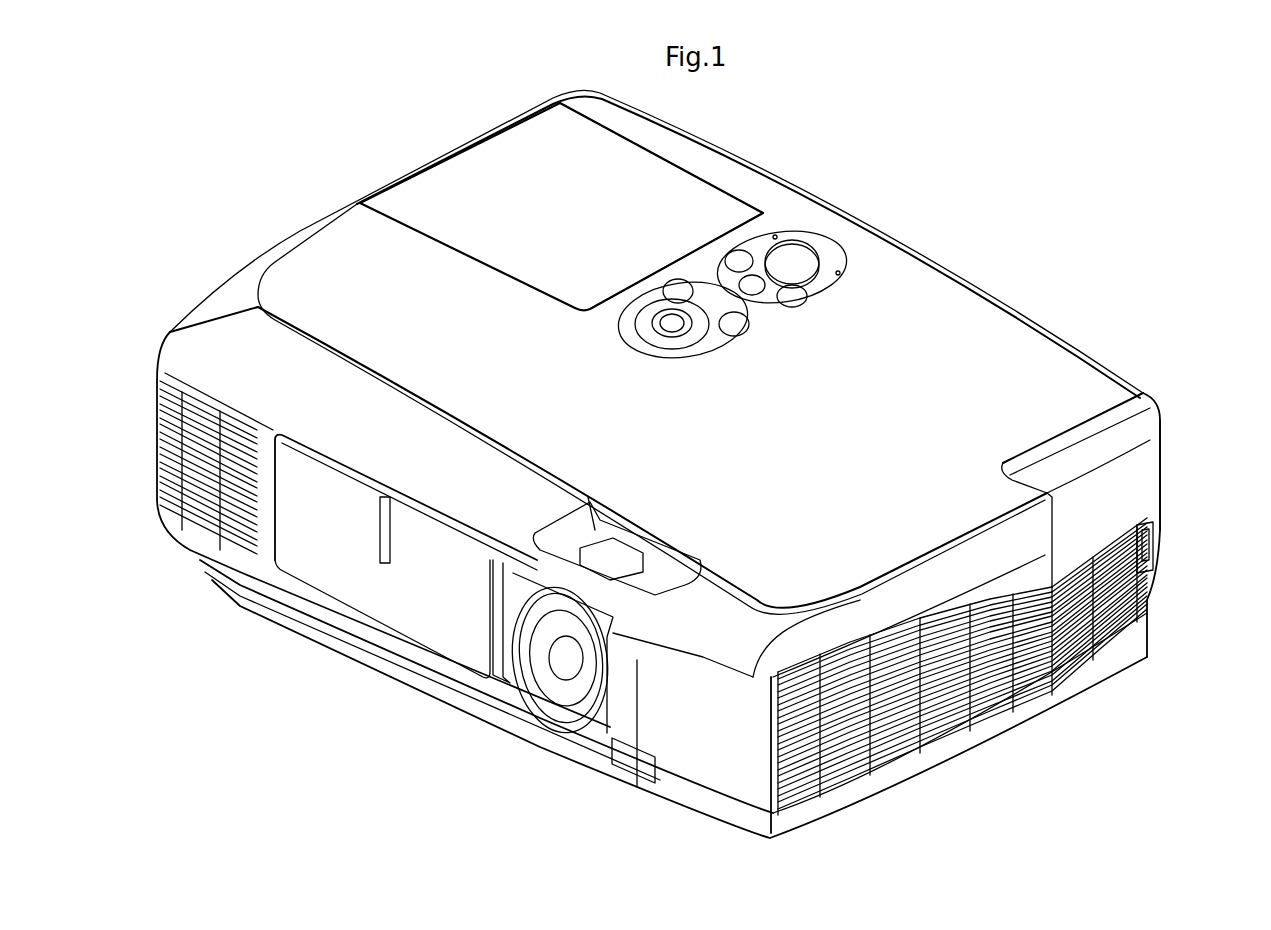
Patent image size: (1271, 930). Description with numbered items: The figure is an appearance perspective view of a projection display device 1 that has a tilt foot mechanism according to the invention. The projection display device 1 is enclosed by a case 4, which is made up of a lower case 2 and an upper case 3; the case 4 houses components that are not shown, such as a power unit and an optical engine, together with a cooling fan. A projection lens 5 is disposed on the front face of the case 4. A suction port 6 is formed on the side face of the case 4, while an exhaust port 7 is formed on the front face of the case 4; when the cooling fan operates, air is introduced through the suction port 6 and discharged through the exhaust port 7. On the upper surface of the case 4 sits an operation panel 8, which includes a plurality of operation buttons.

The projection display device 1 is at (958, 258).
The lower case 2 is at (1160, 603).
The upper case 3 is at (1160, 440).
The case 4 is at (1212, 427).
The projection lens 5 is at (547, 707).
The suction port 6 is at (1013, 703).
The exhaust port 7 is at (203, 547).
The operation panel 8 is at (700, 287).